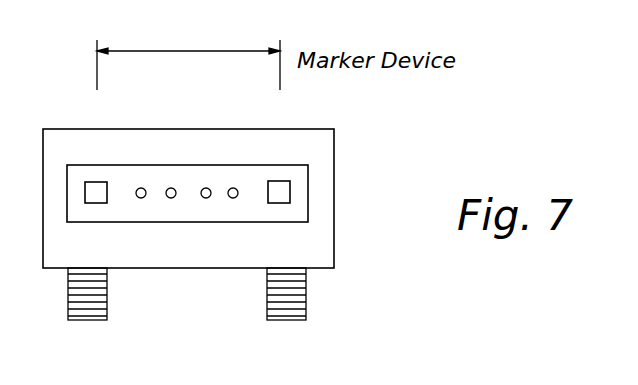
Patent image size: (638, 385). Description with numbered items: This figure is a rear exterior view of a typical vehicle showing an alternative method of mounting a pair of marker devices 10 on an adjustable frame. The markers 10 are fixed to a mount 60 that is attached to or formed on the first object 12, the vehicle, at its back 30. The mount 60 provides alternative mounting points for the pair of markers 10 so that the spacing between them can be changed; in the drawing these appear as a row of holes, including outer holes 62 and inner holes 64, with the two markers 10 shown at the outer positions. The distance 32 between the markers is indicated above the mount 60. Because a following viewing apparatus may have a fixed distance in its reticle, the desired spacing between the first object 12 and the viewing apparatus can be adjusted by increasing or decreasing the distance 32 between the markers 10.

The marker device 10 is at (99, 190).
The first object 12 is at (322, 147).
The back 30 is at (213, 257).
The distance 32 is at (185, 51).
The mount 60 is at (293, 222).
The outer hole 62 is at (141, 199).
The inner hole 64 is at (172, 188).